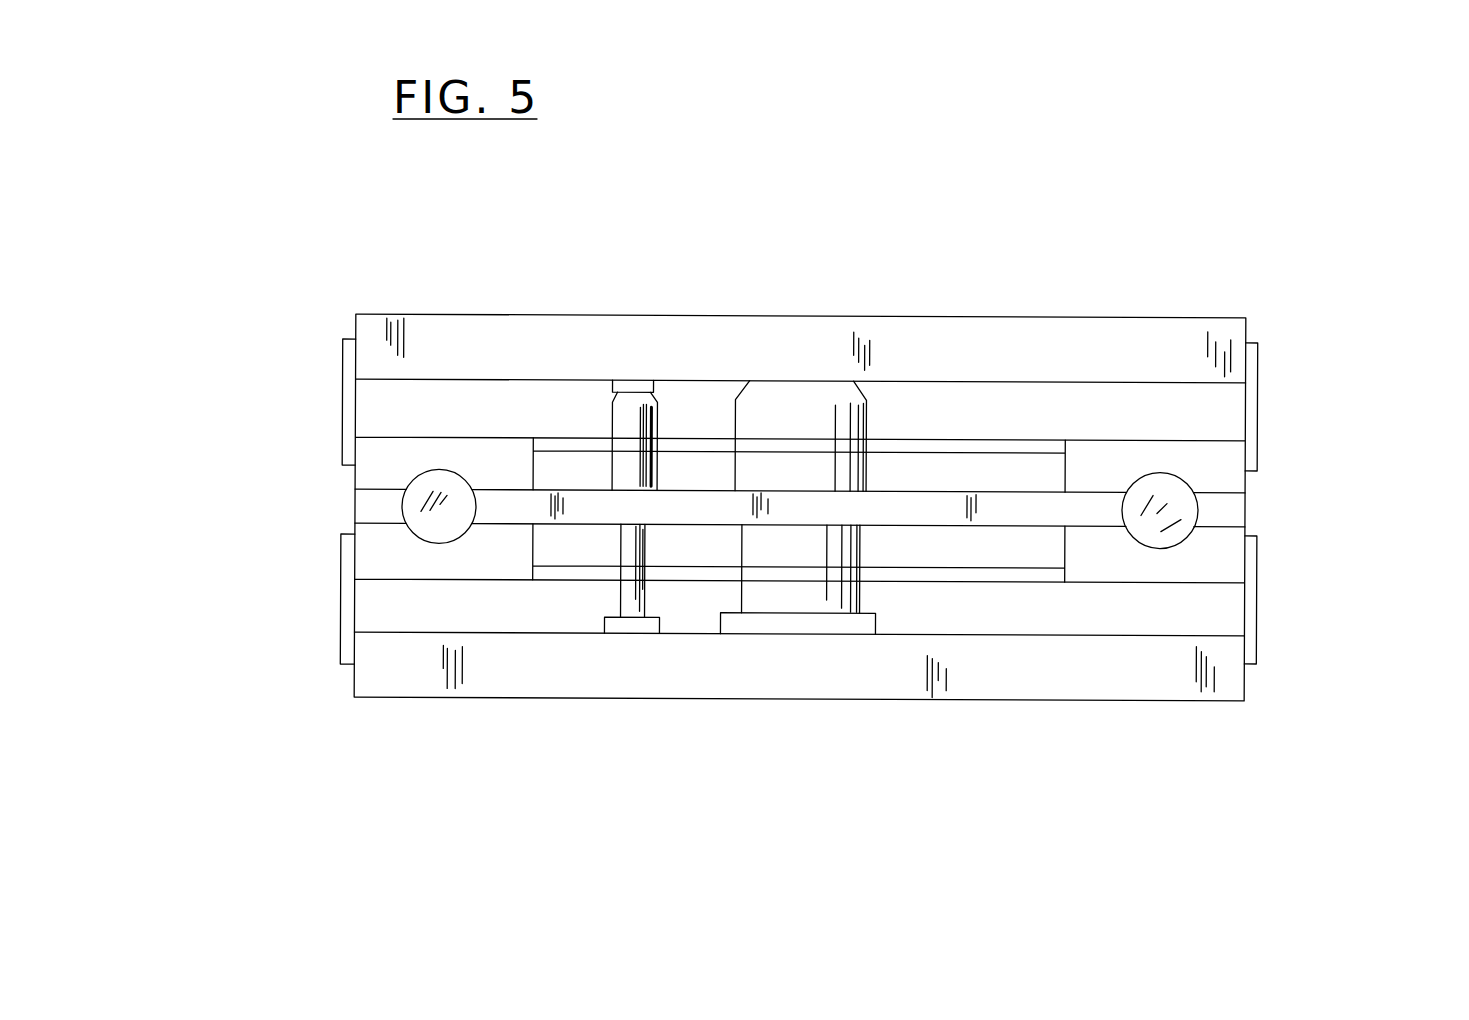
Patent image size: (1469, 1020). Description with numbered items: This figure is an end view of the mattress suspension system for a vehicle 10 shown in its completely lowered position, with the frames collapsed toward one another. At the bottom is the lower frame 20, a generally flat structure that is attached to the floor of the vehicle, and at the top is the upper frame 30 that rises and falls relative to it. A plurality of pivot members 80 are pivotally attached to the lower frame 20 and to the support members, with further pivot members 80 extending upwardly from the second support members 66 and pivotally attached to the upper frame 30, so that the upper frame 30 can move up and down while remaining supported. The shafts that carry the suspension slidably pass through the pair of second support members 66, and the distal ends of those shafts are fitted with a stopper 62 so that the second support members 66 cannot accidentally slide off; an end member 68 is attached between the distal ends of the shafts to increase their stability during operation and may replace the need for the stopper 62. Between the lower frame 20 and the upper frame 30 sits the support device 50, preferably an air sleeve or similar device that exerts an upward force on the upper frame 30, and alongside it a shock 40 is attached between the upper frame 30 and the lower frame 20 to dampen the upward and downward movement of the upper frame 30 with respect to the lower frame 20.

The mattress suspension system for a vehicle 10 is at (915, 200).
The lower frame 20 is at (734, 671).
The upper frame 30 is at (513, 330).
The shock 40 is at (655, 405).
The support device 50 is at (770, 390).
The stopper 62 is at (420, 470).
The second support members 66 is at (380, 510).
The end member 68 is at (1043, 510).
The pivot members 80 is at (350, 390).